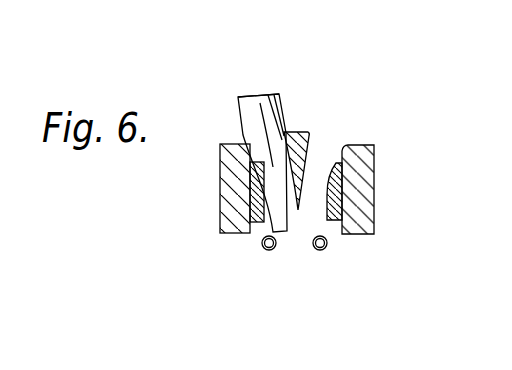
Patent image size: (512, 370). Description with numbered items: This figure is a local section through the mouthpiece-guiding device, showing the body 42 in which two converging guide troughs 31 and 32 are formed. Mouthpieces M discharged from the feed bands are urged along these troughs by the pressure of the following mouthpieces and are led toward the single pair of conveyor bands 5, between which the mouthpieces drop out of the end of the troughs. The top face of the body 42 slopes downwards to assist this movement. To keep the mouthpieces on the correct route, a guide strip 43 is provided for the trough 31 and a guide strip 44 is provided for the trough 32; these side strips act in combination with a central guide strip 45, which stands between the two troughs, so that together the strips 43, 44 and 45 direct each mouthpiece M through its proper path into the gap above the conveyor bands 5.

The workpiece material M is at (278, 95).
The guide trough 32 is at (255, 150).
The central guide strip 45 is at (285, 141).
The guide trough 31 is at (328, 146).
The guide strip 44 is at (253, 187).
The guide strip 43 is at (333, 204).
The body 42 is at (375, 162).
The conveyor bands 5 is at (313, 245).